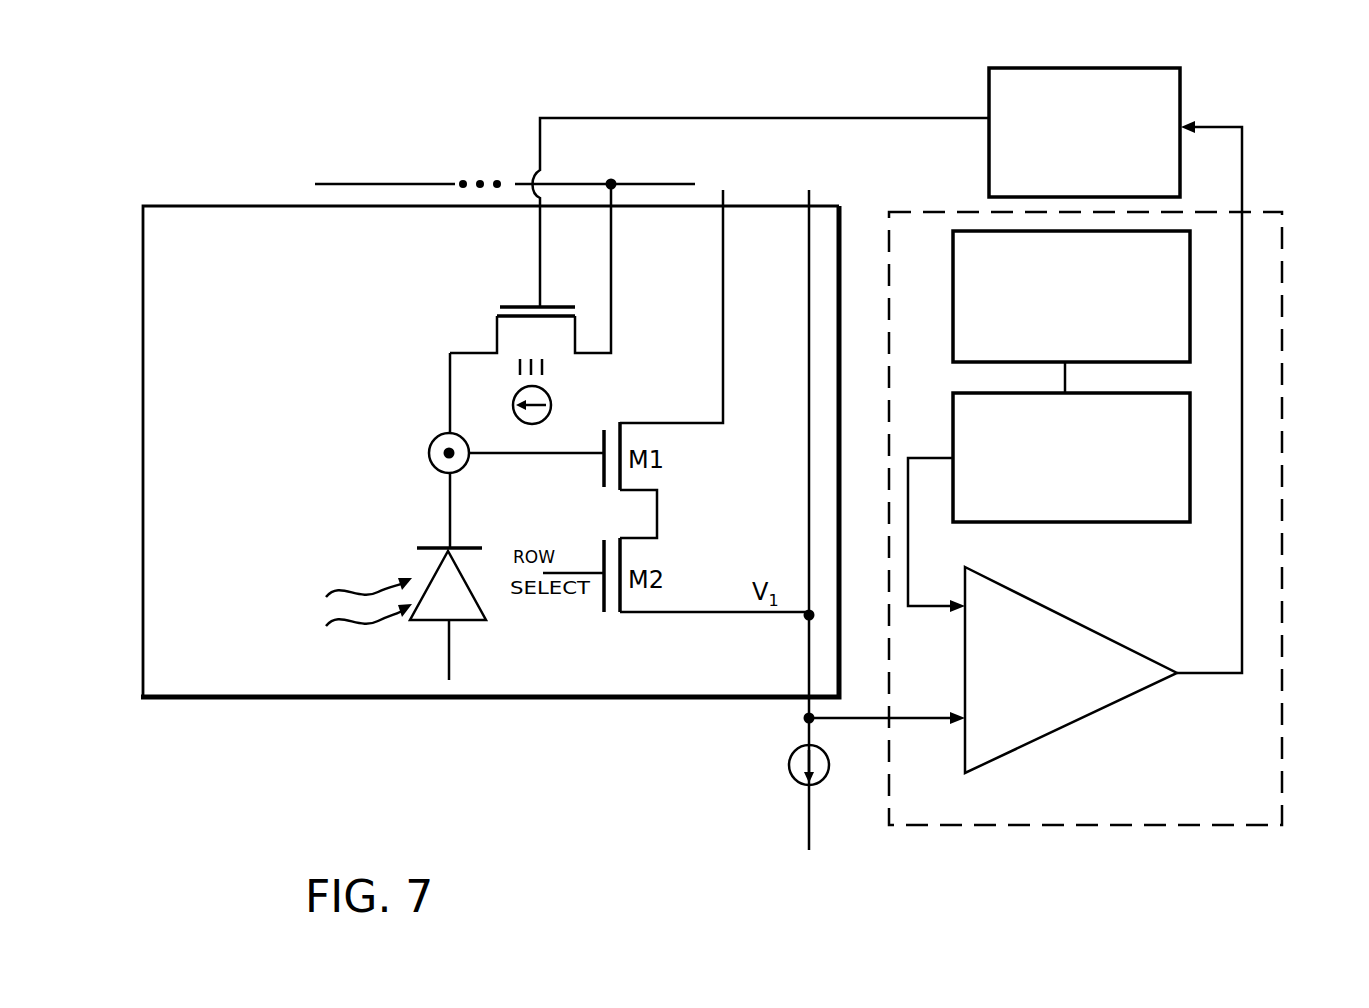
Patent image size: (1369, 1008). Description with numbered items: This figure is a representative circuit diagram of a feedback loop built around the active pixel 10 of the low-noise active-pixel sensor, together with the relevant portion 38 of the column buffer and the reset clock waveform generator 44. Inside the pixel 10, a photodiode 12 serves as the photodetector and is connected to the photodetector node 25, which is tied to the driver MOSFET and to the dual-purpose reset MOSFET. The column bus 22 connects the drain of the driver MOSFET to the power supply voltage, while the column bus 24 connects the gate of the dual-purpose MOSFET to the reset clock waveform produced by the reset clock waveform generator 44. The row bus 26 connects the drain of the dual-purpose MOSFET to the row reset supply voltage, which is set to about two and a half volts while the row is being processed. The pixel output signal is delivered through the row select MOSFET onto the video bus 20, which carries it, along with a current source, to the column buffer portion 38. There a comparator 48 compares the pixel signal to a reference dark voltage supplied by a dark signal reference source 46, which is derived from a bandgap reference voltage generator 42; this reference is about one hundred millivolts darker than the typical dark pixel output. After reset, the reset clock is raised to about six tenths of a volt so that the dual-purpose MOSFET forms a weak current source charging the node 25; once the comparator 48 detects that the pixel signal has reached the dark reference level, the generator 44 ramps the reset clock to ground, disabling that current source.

The active pixel 10 is at (220, 669).
The photodiode 12 is at (465, 625).
The video bus 20 is at (809, 437).
The column bus 22 is at (723, 308).
The column bus 24 is at (538, 258).
The photodetector node 25 is at (429, 455).
The row bus 26 is at (380, 184).
The relevant portion of the column buffer 38 is at (1282, 509).
The bandgap reference voltage generator 42 is at (1190, 320).
The reset clock waveform generator 44 is at (1182, 91).
The dark signal reference source 46 is at (1190, 488).
The comparator 48 is at (1075, 690).